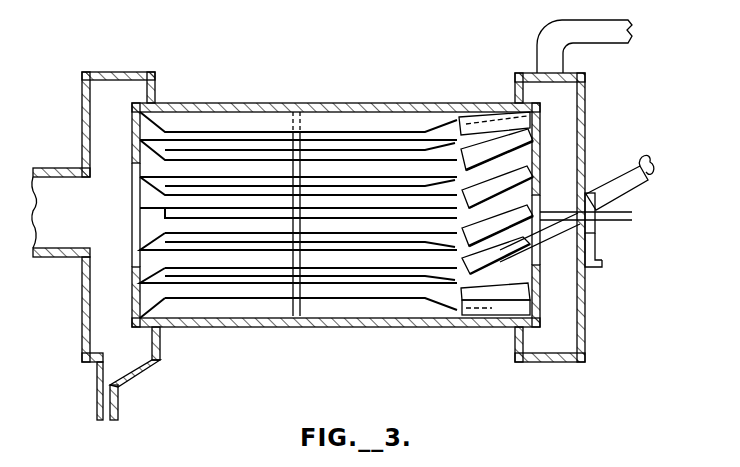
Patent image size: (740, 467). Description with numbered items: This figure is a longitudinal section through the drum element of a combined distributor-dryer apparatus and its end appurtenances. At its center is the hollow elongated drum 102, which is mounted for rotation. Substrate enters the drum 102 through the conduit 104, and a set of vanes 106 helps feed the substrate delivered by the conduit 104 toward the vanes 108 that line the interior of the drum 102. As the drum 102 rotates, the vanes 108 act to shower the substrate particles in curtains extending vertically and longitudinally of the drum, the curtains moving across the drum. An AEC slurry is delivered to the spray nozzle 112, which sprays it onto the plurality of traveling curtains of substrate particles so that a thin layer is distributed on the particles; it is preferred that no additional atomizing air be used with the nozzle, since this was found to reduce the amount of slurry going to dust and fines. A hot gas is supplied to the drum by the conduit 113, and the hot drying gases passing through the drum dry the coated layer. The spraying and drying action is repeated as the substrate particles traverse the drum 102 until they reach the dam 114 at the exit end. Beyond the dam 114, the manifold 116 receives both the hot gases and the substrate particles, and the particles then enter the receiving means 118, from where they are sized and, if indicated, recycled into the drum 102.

The drum 102 is at (237, 103).
The conduit 104 is at (640, 178).
The vanes 106 is at (476, 123).
The vanes 108 is at (446, 239).
The spray nozzle 112 is at (598, 262).
The conduit 113 is at (597, 238).
The dam 114 is at (135, 130).
The manifold 116 is at (82, 110).
The receiving means 118 is at (82, 337).